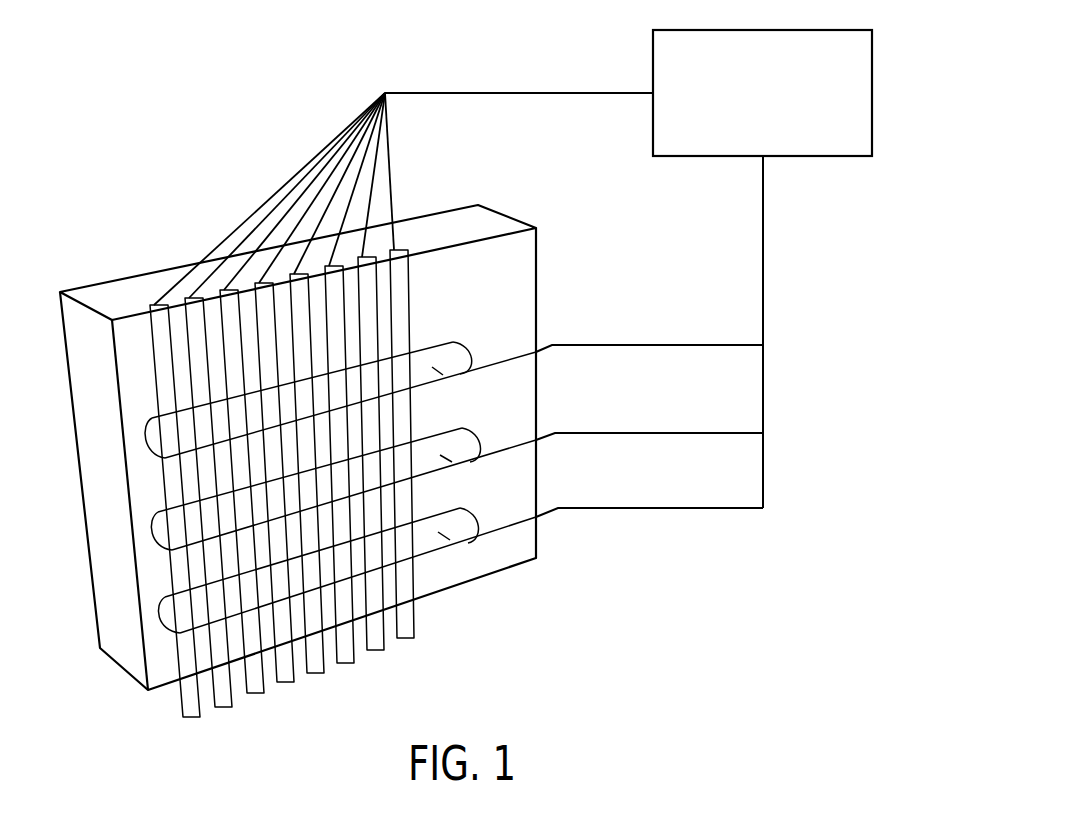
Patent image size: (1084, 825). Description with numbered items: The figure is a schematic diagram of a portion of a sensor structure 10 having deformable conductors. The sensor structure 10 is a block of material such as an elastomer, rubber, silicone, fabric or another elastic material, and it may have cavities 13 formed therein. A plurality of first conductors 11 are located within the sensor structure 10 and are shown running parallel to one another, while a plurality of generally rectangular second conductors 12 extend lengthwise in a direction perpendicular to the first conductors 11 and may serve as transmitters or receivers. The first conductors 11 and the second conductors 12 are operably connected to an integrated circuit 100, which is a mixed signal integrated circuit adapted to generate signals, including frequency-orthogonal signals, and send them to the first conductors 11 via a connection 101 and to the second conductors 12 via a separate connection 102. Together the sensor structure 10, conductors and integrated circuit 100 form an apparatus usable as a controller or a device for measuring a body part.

The sensor structure 10 is at (527, 261).
The first conductors 11 is at (157, 437).
The second conductors 12 is at (313, 660).
The cavities 13 is at (168, 460).
The integrated circuit 100 is at (872, 97).
The connection 101 is at (750, 510).
The second wires 102 is at (385, 93).